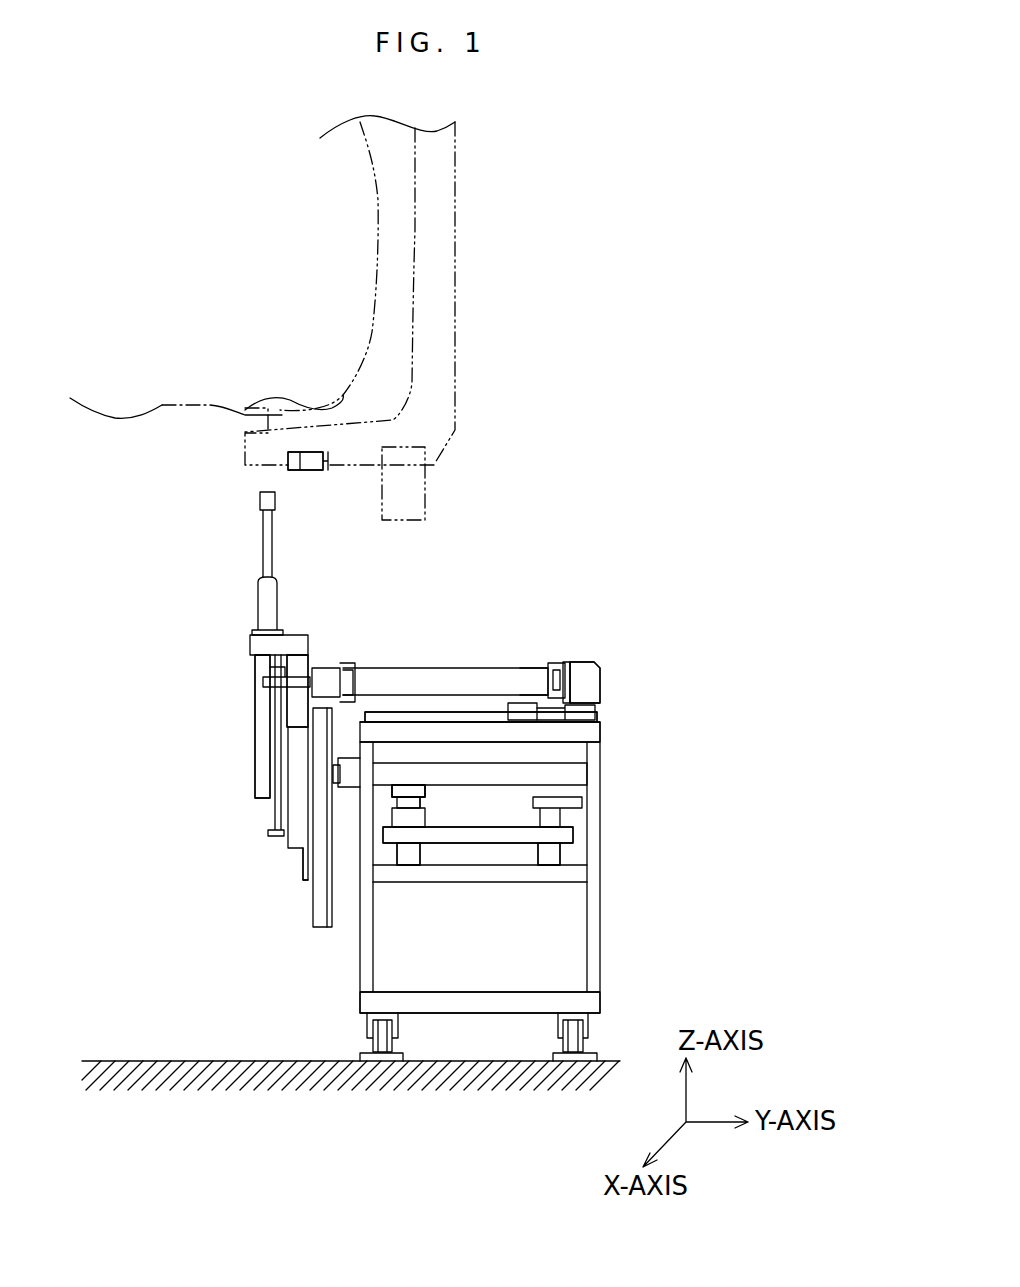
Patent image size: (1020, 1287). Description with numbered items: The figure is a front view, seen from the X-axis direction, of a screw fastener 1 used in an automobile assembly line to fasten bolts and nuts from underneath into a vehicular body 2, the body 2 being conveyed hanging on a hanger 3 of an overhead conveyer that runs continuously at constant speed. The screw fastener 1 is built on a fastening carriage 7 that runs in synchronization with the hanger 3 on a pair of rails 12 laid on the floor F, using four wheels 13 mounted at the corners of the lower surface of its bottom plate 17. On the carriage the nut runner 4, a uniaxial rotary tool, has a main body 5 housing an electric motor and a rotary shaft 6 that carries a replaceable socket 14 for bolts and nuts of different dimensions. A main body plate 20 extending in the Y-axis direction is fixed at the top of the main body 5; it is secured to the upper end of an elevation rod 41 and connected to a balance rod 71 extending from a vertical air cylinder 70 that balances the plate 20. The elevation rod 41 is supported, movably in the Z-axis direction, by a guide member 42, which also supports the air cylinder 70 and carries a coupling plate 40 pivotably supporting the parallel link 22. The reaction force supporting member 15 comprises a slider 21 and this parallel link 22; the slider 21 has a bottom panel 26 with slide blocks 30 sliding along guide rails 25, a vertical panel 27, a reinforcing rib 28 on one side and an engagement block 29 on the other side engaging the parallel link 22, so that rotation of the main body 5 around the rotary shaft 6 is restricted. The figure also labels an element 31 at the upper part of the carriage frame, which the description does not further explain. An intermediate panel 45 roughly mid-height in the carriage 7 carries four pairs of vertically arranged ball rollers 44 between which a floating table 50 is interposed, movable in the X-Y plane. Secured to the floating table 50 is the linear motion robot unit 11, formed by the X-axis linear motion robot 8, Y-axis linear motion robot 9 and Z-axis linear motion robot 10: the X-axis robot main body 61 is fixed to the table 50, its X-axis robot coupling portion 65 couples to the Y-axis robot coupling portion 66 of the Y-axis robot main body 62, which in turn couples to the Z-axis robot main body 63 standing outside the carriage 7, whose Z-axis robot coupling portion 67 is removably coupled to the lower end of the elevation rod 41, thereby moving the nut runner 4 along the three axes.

The screw fastener 1 is at (652, 538).
The vehicular body 2 is at (365, 207).
The hanger 3 is at (438, 293).
The nut runner 4 is at (238, 735).
The main body 5 is at (263, 707).
The rotary shaft 6 is at (255, 618).
The fastening carriage 7 is at (627, 919).
The X-axis linear motion robot 8 is at (384, 830).
The Y-axis linear motion robot 9 is at (580, 780).
The Z-axis linear motion robot 10 is at (300, 928).
The linear motion robot unit 11 is at (536, 753).
The rails 12 is at (383, 1055).
The wheels 13 is at (373, 1032).
The socket 14 is at (258, 588).
The reaction force supporting member 15 is at (487, 652).
The bottom plate 17 is at (590, 1000).
The main body plate 20 is at (293, 643).
The slider 21 is at (603, 663).
The parallel link 22 is at (542, 665).
The guide rails 25 is at (383, 712).
The bottom panel 26 is at (590, 710).
The vertical panel 27 is at (567, 672).
The reinforcing rib 28 is at (592, 680).
The engagement block 29 is at (557, 673).
The slide blocks 30 is at (540, 704).
The frame top 31 is at (590, 735).
The coupling plate 40 is at (325, 681).
The elevation rod 41 is at (297, 842).
The guide member 42 is at (293, 718).
The ball rollers 44 is at (407, 860).
The intermediate panel 45 is at (580, 870).
The floating table 50 is at (482, 837).
The X-axis robot main body 61 is at (422, 820).
The Y-axis robot main body 62 is at (508, 775).
The Z-axis robot main body 63 is at (320, 893).
The X-axis robot coupling portion 65 is at (437, 800).
The Y-axis robot coupling portion 66 is at (412, 797).
The Z-axis robot coupling portion 67 is at (300, 870).
The air cylinder 70 is at (277, 808).
The balance rod 71 is at (263, 672).
The floor F is at (228, 1062).